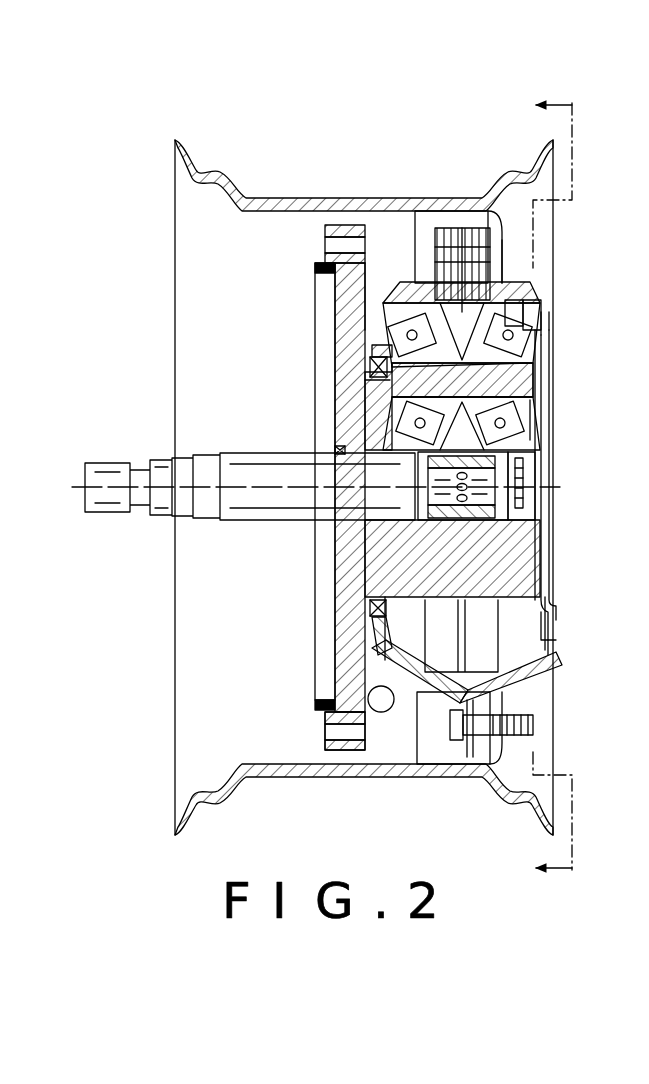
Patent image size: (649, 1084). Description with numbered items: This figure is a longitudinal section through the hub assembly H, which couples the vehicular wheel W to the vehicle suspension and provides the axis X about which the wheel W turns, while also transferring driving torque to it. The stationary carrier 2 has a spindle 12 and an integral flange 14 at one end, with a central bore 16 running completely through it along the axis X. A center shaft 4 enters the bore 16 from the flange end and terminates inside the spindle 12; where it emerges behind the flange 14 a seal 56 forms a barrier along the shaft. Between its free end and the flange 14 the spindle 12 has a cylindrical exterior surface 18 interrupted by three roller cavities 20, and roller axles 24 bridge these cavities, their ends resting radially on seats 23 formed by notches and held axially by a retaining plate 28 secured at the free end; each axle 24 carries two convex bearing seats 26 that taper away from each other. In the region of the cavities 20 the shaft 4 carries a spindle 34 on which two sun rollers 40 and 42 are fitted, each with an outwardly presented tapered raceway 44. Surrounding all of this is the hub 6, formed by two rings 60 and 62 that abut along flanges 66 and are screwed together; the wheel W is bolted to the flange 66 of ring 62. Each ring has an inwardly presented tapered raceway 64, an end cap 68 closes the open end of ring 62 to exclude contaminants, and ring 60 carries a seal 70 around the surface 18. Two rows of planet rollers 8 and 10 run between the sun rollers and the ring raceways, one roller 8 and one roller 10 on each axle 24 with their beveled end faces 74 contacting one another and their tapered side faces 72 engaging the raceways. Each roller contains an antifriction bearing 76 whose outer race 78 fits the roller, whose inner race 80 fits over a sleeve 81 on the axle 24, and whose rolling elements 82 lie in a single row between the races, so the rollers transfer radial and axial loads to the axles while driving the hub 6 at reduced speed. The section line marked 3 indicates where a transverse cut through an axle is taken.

The vehicular wheel W is at (305, 196).
The hub assembly H is at (590, 182).
The axis X is at (306, 487).
The carrier 2 is at (322, 265).
The section line 3- 3 is at (538, 487).
The center shaft 4 is at (120, 452).
The hub 6 is at (426, 705).
The planet rollers 8 is at (345, 450).
The planet rollers 10 is at (524, 452).
The spindle 12 is at (550, 626).
The flange 14 is at (330, 718).
The central bore 16 is at (376, 500).
The cylindrical exterior surface 18 is at (550, 642).
The roller cavities 20 is at (398, 440).
The seats 23 is at (388, 405).
The roller axles 24 is at (358, 380).
The bearing seats 26 is at (360, 335).
The retaining plate 28 is at (549, 366).
The spindle 34 is at (526, 506).
The sun roller 40 is at (365, 560).
The sun roller 42 is at (490, 522).
The tapered raceway 44 is at (380, 590).
The seal 56 is at (365, 522).
The ring 60 is at (395, 705).
The ring 62 is at (530, 690).
The raceway 64 is at (378, 648).
The flanges 66 is at (480, 300).
The end cap 68 is at (552, 598).
The seal 70 is at (368, 366).
The tapered side face 72 is at (334, 272).
The beveled end face 74 is at (502, 253).
The antifriction bearing 76 is at (395, 425).
The outer race 78 is at (545, 315).
The inner race 80 is at (541, 350).
The sleeve 81 is at (527, 420).
The rolling elements 82 is at (550, 326).